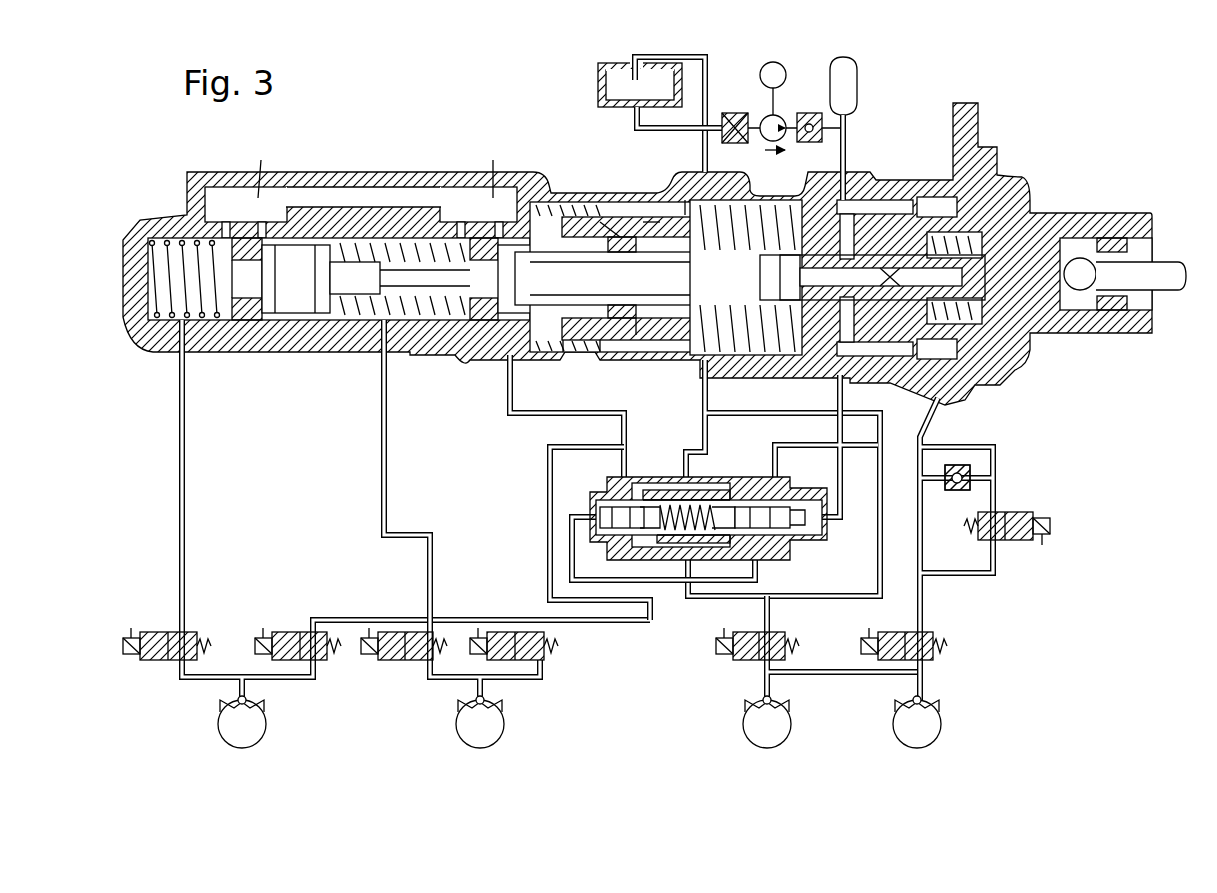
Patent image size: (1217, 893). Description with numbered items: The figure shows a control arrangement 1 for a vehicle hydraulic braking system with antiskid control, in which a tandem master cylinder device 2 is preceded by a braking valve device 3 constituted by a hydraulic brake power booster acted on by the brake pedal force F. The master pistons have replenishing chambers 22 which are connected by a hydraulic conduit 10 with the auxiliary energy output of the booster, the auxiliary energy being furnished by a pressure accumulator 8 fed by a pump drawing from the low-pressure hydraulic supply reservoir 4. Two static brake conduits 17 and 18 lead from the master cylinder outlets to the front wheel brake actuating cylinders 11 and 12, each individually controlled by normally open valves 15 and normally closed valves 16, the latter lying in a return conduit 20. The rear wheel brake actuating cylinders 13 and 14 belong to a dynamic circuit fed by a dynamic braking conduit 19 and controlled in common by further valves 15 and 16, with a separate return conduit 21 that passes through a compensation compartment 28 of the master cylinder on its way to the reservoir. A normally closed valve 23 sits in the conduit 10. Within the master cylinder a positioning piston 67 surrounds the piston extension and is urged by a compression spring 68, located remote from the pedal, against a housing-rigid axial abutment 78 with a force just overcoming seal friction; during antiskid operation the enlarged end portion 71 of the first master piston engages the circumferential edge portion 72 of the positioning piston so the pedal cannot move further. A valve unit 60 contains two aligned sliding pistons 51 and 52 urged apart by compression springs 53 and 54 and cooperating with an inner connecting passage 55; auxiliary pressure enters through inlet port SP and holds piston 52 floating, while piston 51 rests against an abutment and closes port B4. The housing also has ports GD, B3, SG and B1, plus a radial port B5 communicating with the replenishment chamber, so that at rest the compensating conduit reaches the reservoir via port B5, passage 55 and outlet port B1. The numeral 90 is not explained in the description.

The control arrangement 1 is at (205, 165).
The master cylinder device 2 is at (455, 170).
The braking valve device 3 is at (1040, 188).
The hydraulic supply reservoir 4 is at (598, 85).
The pressure accumulator 8 is at (858, 85).
The hydraulic conduit 10 is at (537, 417).
The wheel brake actuating cylinder 11 is at (255, 700).
The wheel brake actuating cylinder 12 is at (493, 700).
The wheel brake actuating cylinder 13 is at (780, 700).
The wheel brake actuating cylinder 14 is at (903, 700).
The two-port two-position valve 15 is at (170, 662).
The two-port two-position valve 16 is at (315, 662).
The braking conduit 17 is at (186, 453).
The braking conduit 18 is at (388, 453).
The dynamic braking conduit 19 is at (925, 600).
The return conduit 20 is at (548, 503).
The return conduit 21 is at (832, 598).
The replenishing chamber 22 is at (378, 165).
The two-port two-position valve 23 is at (1010, 512).
The compensation compartment 28 is at (772, 215).
The sliding piston 51 is at (614, 528).
The sliding piston 52 is at (790, 530).
The compression spring 53 is at (676, 500).
The compression spring 54 is at (706, 492).
The inner connecting passage 55 is at (690, 472).
The valve unit 60 is at (719, 519).
The positioning piston 67 is at (605, 222).
The compression spring 68 is at (563, 352).
The enlarged end portion 71 is at (640, 340).
The circumferential edge portion 72 is at (690, 215).
The axial abutment 78 is at (643, 222).
The chamber 90 is at (600, 352).
The brake pedal force F is at (1190, 276).
The outlet port B1 is at (700, 565).
The port B3 is at (778, 577).
The connecting port B4 is at (577, 505).
The radial port B5 is at (636, 464).
The port GD is at (794, 464).
The inlet port SP is at (843, 529).
The port SG is at (657, 565).